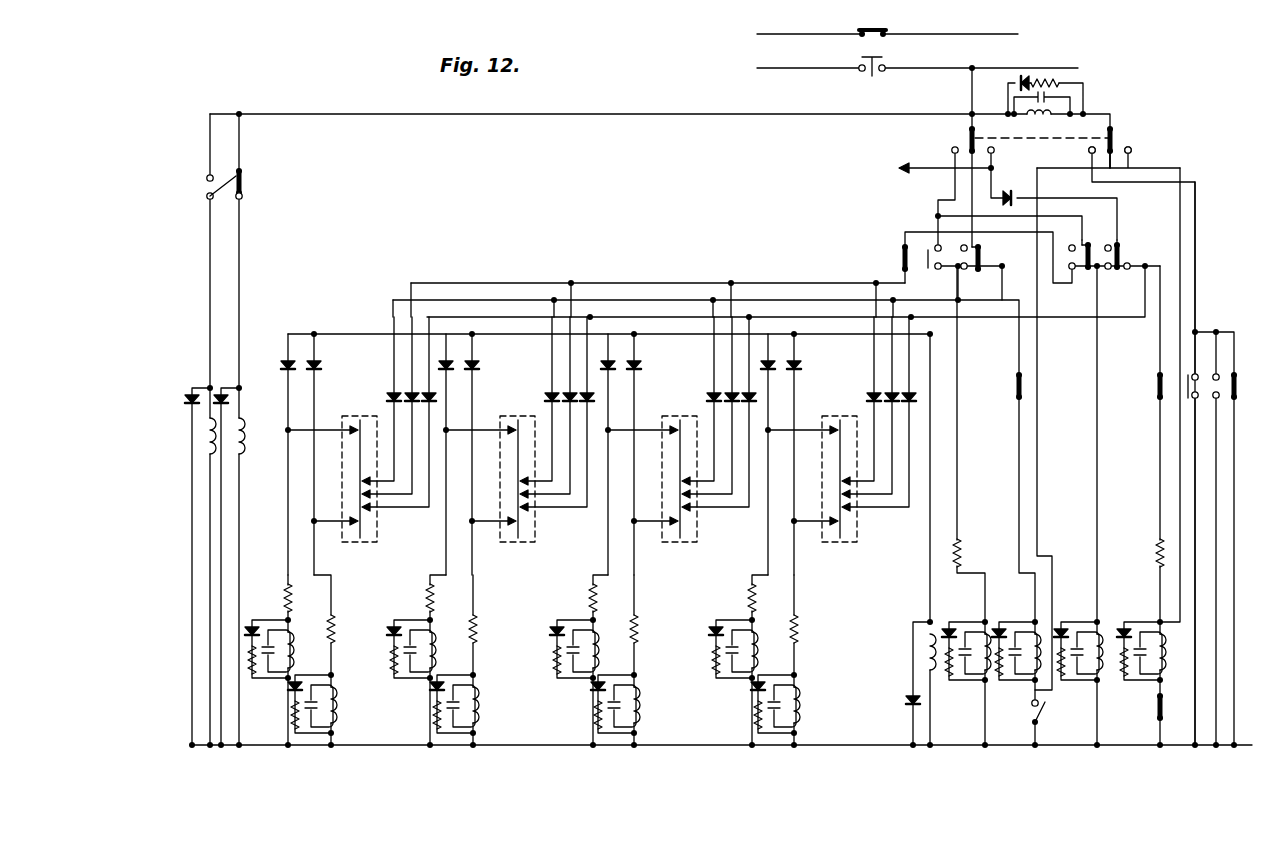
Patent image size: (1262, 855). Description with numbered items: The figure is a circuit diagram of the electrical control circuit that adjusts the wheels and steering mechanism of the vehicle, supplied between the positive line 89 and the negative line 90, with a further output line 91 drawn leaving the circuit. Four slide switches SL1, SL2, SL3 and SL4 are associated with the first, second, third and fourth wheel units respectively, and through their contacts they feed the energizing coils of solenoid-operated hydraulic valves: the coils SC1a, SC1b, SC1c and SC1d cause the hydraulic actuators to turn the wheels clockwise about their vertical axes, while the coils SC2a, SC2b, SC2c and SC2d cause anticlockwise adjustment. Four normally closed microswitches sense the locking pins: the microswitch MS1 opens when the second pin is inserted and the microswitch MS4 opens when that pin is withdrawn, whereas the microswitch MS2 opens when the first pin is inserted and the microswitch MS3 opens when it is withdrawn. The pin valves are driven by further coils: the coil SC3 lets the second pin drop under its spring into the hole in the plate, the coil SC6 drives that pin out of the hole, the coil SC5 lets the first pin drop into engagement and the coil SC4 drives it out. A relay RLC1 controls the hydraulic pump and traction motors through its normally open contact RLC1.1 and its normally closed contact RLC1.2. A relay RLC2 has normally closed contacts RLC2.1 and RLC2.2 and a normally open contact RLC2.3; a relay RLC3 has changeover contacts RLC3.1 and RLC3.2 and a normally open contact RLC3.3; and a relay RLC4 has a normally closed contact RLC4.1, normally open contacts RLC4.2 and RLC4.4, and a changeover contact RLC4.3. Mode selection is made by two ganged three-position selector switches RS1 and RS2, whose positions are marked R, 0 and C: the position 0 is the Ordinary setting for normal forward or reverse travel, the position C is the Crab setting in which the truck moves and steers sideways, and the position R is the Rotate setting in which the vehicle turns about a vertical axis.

The microswitch MS1 is at (232, 176).
The microswitch MS2 is at (244, 180).
The relay RLC4 is at (215, 416).
The relay RLC3 is at (243, 416).
The slide switch SL1 is at (360, 416).
The slide switch SL2 is at (840, 416).
The slide switch SL3 is at (518, 416).
The slide switch SL4 is at (679, 416).
The energizing coil SC1a is at (292, 636).
The energizing coil SC1b is at (434, 636).
The energizing coil SC1c is at (597, 641).
The energizing coil SC1d is at (756, 641).
The energizing coil SC2a is at (337, 711).
The energizing coil SC2b is at (478, 702).
The energizing coil SC2c is at (639, 702).
The energizing coil SC2d is at (799, 702).
The relay RLC2 is at (927, 650).
The energizing coil SC3 is at (985, 672).
The energizing coil SC4 is at (1036, 652).
The energizing coil SC5 is at (1098, 666).
The energizing coil SC6 is at (1160, 652).
The microswitch MS3 is at (1061, 717).
The microswitch MS4 is at (1157, 716).
The negative line 90 is at (1246, 744).
The positive line 89 is at (1053, 70).
The output line 91 is at (956, 172).
The normally closed contact RLC1.2 is at (860, 36).
The normally open contact RLC1.1 is at (869, 77).
The relay RLC1 is at (1056, 112).
The three-position selector switch RS1 is at (968, 140).
The three-position selector switch RS2 is at (1113, 140).
The Rotate position R is at (1083, 155).
The Crab position C is at (1137, 151).
The Ordinary position 0 is at (1118, 163).
The changeover contact RLC3.1 is at (1090, 246).
The changeover contact RLC3.2 is at (1119, 246).
The changeover contact RLC4.3 is at (946, 250).
The normally closed contact RLC4.1 is at (899, 256).
The normally open contact RLC4.2 is at (976, 262).
The normally closed contact RLC2.1 is at (1022, 380).
The normally closed contact RLC2.2 is at (1158, 376).
The normally open contact RLC2.3 is at (1194, 398).
The normally open contact RLC4.4 is at (1215, 398).
The normally open contact RLC3.3 is at (1234, 398).